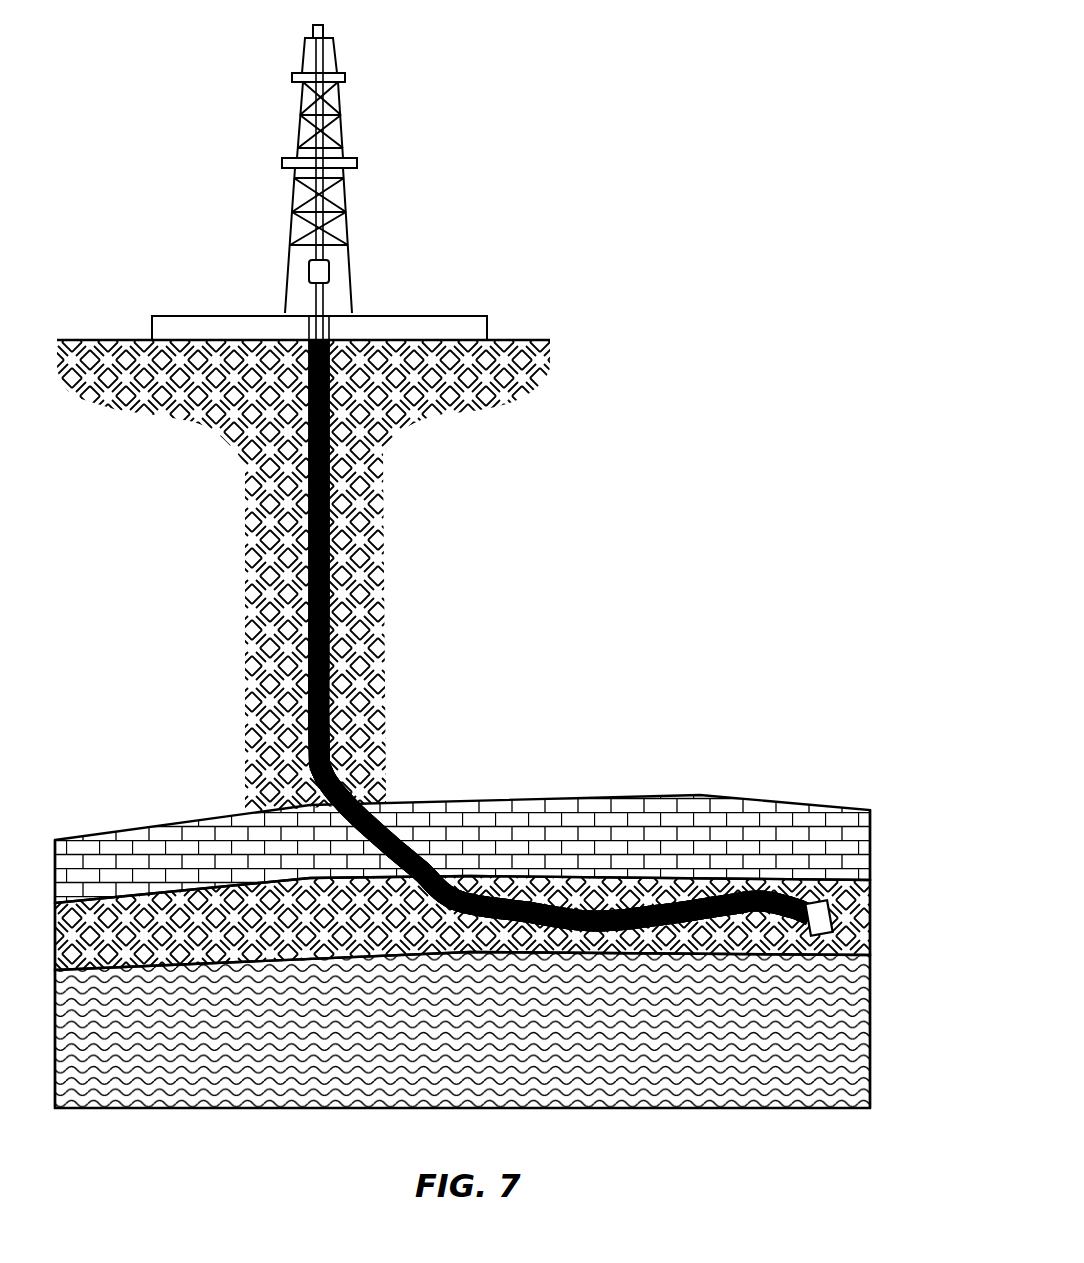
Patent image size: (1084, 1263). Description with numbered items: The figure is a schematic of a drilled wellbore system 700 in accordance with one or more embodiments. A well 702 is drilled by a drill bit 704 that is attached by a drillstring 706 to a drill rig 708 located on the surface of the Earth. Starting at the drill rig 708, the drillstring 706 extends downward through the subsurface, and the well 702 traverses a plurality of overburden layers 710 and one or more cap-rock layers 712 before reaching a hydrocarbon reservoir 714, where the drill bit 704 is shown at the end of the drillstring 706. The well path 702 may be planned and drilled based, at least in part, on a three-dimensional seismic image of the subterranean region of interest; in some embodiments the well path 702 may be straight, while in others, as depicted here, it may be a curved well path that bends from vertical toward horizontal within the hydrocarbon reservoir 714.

The drilling rig / derrick 700 is at (349, 233).
The well 702 is at (333, 528).
The drill bit 704 is at (830, 903).
The drillstring 706 is at (327, 292).
The drill rig 708 is at (521, 340).
The overburden layers 710 is at (383, 602).
The cap-rock layers 712 is at (629, 813).
The hydrocarbon reservoir 714 is at (197, 907).